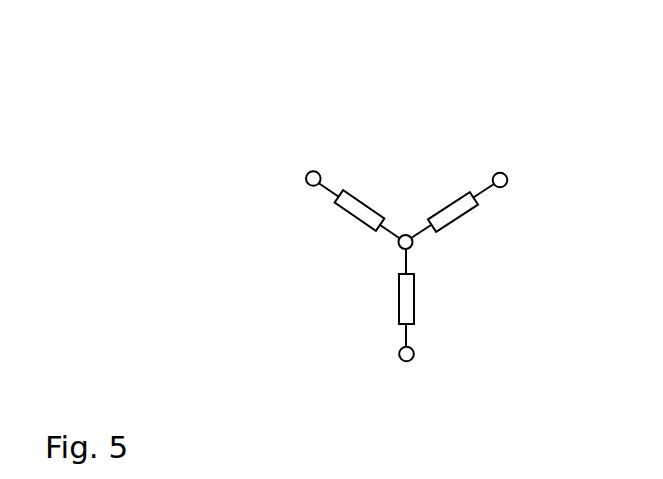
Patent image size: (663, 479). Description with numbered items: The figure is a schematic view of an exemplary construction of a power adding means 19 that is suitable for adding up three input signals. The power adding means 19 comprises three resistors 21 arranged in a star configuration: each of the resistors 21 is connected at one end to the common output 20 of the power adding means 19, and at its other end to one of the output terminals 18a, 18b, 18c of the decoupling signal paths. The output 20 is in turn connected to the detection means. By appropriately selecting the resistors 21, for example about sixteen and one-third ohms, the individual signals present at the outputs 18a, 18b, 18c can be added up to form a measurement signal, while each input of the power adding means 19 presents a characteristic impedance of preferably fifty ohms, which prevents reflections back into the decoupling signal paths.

The power adding means 19 is at (349, 99).
The output 20 is at (413, 247).
The output terminal 18a is at (308, 170).
The output terminal 18b is at (507, 170).
The output terminal 18c is at (414, 361).
The resistor 21 is at (368, 204).